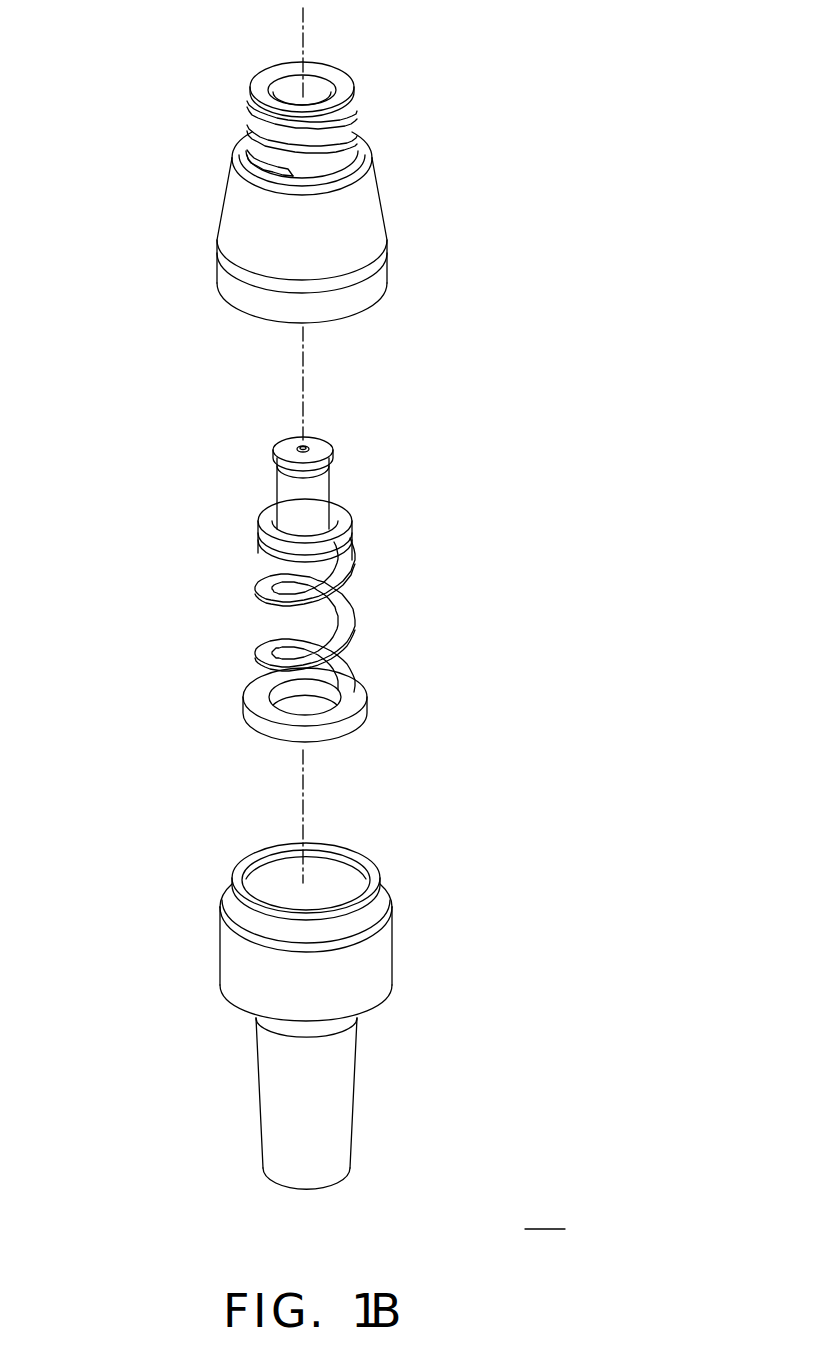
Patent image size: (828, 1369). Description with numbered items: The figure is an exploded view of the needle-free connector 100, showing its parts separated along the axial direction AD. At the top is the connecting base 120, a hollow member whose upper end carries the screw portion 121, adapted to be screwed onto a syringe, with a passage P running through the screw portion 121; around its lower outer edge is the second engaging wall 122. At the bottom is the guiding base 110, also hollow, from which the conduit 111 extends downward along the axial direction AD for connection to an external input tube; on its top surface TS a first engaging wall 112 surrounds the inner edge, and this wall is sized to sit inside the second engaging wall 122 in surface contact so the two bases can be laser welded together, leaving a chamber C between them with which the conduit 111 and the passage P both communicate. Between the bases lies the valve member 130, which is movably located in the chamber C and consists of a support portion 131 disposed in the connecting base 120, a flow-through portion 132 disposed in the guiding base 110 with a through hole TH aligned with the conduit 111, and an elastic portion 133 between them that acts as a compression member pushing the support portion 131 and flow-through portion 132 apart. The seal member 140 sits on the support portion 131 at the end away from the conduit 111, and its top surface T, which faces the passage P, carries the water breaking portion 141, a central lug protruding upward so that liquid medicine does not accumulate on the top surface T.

The needle-free connector 100 is at (545, 1211).
The guiding base 110 is at (318, 1008).
The conduit 111 is at (335, 1102).
The first engaging wall 112 is at (318, 876).
The connecting base 120 is at (342, 187).
The screw portion 121 is at (340, 147).
The second engaging wall 122 is at (383, 271).
The valve member 130 is at (318, 628).
The support portion 131 is at (270, 550).
The flow-through portion 132 is at (290, 711).
The elastic portion 133 is at (262, 652).
The seal member 140 is at (293, 462).
The water breaking portion 141 is at (306, 444).
The axial direction AD is at (302, 35).
The passage P is at (313, 97).
The top surface of the seal member T is at (286, 446).
The through hole TH is at (303, 698).
The chamber C is at (287, 864).
The top surface of the guiding base TS is at (257, 924).